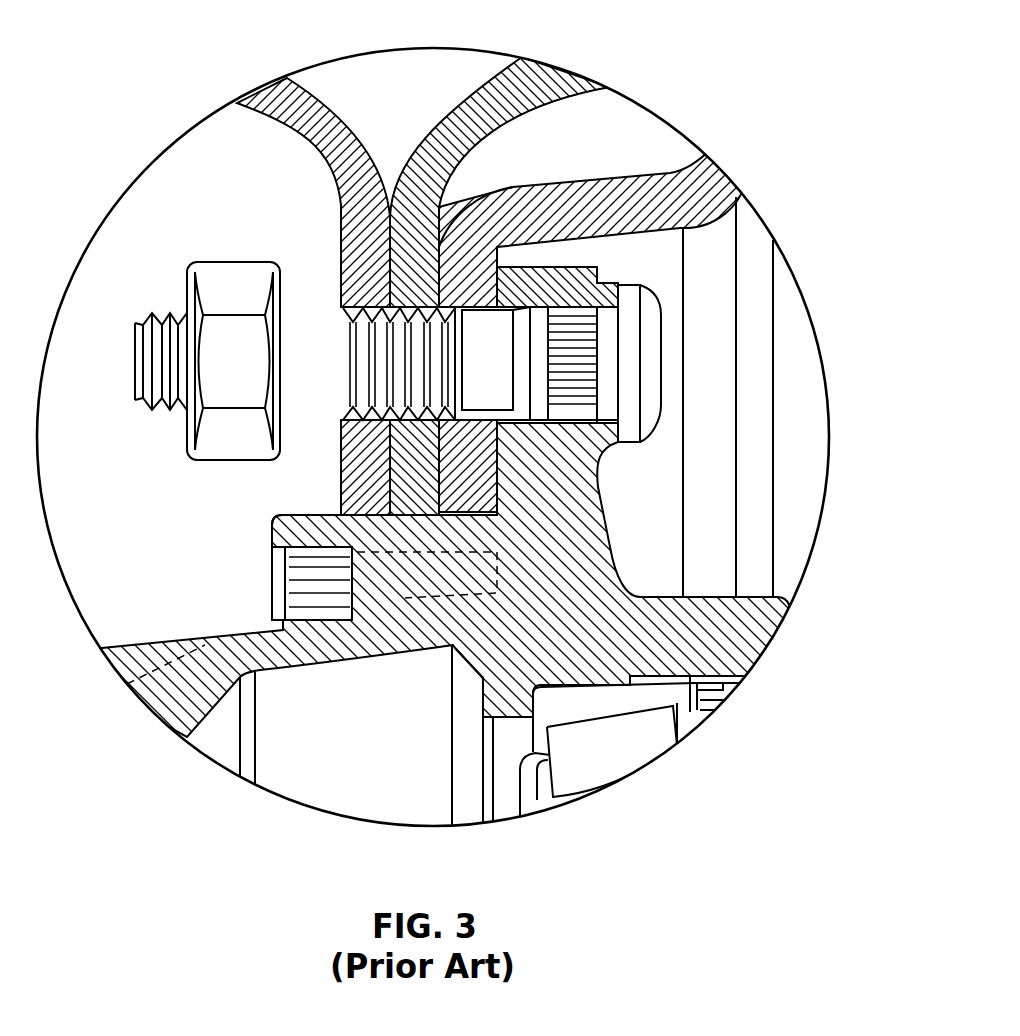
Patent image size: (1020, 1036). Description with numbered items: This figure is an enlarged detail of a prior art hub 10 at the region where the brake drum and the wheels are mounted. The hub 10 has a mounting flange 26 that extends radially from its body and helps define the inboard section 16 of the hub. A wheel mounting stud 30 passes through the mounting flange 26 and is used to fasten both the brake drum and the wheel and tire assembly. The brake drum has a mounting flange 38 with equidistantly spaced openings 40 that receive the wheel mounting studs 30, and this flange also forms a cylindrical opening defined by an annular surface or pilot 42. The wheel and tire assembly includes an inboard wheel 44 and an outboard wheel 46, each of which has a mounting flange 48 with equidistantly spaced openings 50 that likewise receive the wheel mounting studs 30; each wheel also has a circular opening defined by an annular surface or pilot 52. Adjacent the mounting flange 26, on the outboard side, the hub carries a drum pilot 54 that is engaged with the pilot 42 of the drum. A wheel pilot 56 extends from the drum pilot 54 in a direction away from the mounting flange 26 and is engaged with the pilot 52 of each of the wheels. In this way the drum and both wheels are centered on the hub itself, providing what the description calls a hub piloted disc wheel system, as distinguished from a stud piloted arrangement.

The hub 10 is at (712, 592).
The inboard section 16 is at (640, 596).
The mounting flange 26 is at (584, 505).
The wheel mounting stud 30 is at (630, 347).
The mounting flange 38 is at (537, 211).
The openings 40 is at (477, 306).
The pilot 42 is at (312, 407).
The inboard wheel 44 is at (546, 82).
The outboard wheel 46 is at (299, 105).
The mounting flange 48 is at (424, 170).
The openings 50 is at (372, 238).
The pilot 52 is at (285, 546).
The drum pilot 54 is at (343, 444).
The wheel pilot 56 is at (307, 514).